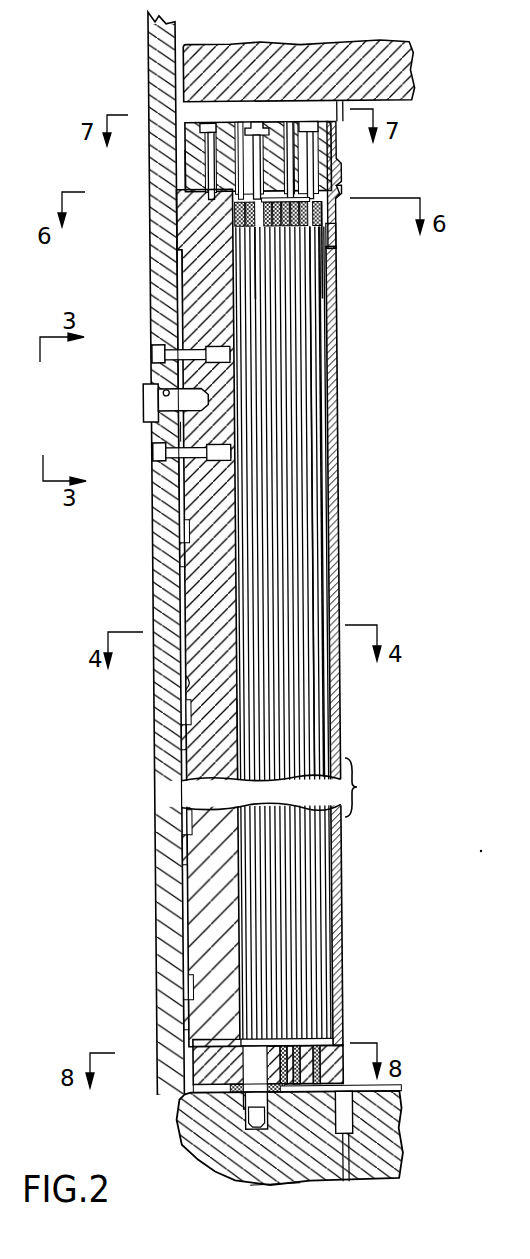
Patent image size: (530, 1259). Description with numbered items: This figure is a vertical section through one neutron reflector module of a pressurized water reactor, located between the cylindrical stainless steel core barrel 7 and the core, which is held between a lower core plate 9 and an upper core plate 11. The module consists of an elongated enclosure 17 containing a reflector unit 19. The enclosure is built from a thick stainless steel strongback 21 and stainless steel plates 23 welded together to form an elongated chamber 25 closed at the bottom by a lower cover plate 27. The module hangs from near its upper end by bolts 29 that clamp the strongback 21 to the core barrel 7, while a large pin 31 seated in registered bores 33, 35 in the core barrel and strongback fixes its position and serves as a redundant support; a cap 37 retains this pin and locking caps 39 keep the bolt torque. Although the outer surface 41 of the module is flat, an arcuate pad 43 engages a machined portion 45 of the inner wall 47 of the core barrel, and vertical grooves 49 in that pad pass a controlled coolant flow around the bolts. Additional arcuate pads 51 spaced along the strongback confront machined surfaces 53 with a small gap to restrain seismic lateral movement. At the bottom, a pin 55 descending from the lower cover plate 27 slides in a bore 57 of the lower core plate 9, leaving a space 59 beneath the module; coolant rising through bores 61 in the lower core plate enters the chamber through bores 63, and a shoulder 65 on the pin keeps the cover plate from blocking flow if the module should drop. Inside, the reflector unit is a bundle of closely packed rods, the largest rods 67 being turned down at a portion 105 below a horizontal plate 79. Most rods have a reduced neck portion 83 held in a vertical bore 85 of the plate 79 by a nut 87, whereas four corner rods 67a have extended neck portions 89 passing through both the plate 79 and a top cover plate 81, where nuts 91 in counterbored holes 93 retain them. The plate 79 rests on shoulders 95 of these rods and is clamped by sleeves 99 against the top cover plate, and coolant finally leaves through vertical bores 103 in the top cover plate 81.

The core barrel 7 is at (156, 922).
The lower core plate 9 is at (222, 1166).
The upper core plate 11 is at (324, 56).
The enclosure 17 is at (178, 266).
The reflector unit 19 is at (288, 431).
The strongback 21 is at (200, 768).
The plates 23 is at (336, 562).
The chamber 25 is at (273, 126).
The lower cover plate 27 is at (338, 1056).
The bolts 29 is at (178, 338).
The pin 31 is at (163, 411).
The bore 33 is at (175, 394).
The bore 35 is at (172, 363).
The cap 37 is at (143, 393).
The locking caps 39 is at (151, 348).
The outer surface 41 is at (185, 615).
The arcuate pad 43 is at (176, 312).
The machined portion 45 is at (180, 305).
The inner wall 47 is at (183, 690).
The vertical grooves 49 is at (178, 437).
The arcuate pads 51 is at (178, 563).
The machined surfaces 53 is at (182, 533).
The pin 55 is at (262, 1177).
The bore 57 is at (247, 1123).
The space 59 is at (328, 1090).
The bores 61 is at (352, 1119).
The bores 63 is at (302, 1050).
The shoulder 65 is at (236, 1089).
The largest diameter rods 67 is at (325, 322).
The corner rods 67a is at (311, 359).
The horizontal plate 79 is at (331, 226).
The top cover plate 81 is at (195, 158).
The neck portion 83 is at (235, 213).
The vertical bore 85 is at (235, 223).
The nut 87 is at (228, 205).
The extended neck portion 89 is at (333, 166).
The nuts 91 is at (315, 130).
The counterbored holes 93 is at (296, 127).
The shoulders 95 is at (331, 242).
The sleeves 99 is at (334, 196).
The vertical bores 103 is at (224, 125).
The turned down portion 105 is at (328, 272).